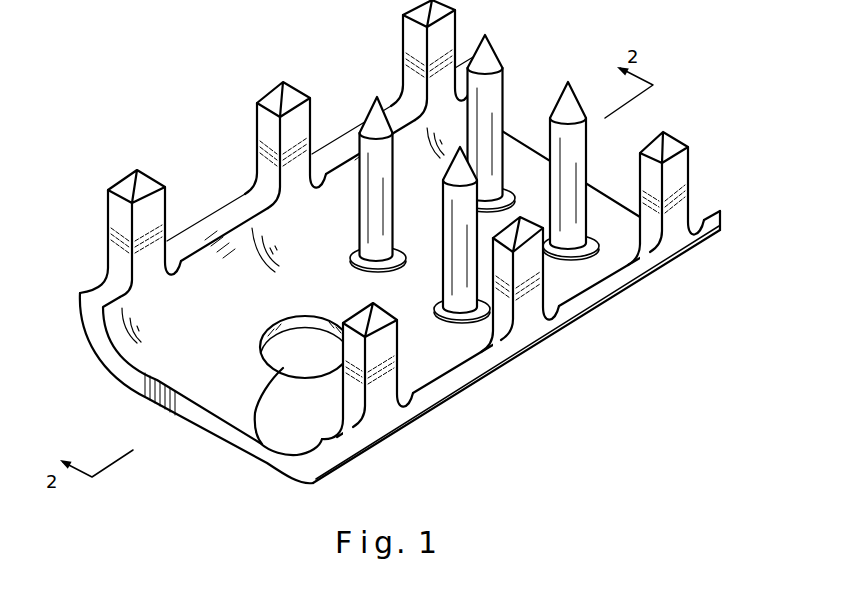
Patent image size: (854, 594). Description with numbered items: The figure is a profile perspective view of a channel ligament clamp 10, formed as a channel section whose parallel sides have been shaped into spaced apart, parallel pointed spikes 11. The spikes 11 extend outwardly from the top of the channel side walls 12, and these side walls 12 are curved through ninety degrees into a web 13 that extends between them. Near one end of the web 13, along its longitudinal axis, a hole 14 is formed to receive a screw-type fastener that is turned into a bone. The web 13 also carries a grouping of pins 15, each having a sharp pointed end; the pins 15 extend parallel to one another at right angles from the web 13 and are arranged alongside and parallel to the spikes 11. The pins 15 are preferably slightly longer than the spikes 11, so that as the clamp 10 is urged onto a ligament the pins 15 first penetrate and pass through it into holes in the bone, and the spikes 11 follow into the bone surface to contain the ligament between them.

The clamp 10 is at (418, 246).
The spikes 11 is at (680, 172).
The channel side walls 12 is at (203, 225).
The web 13 is at (219, 367).
The hole 14 is at (262, 447).
The pins 15 is at (546, 132).